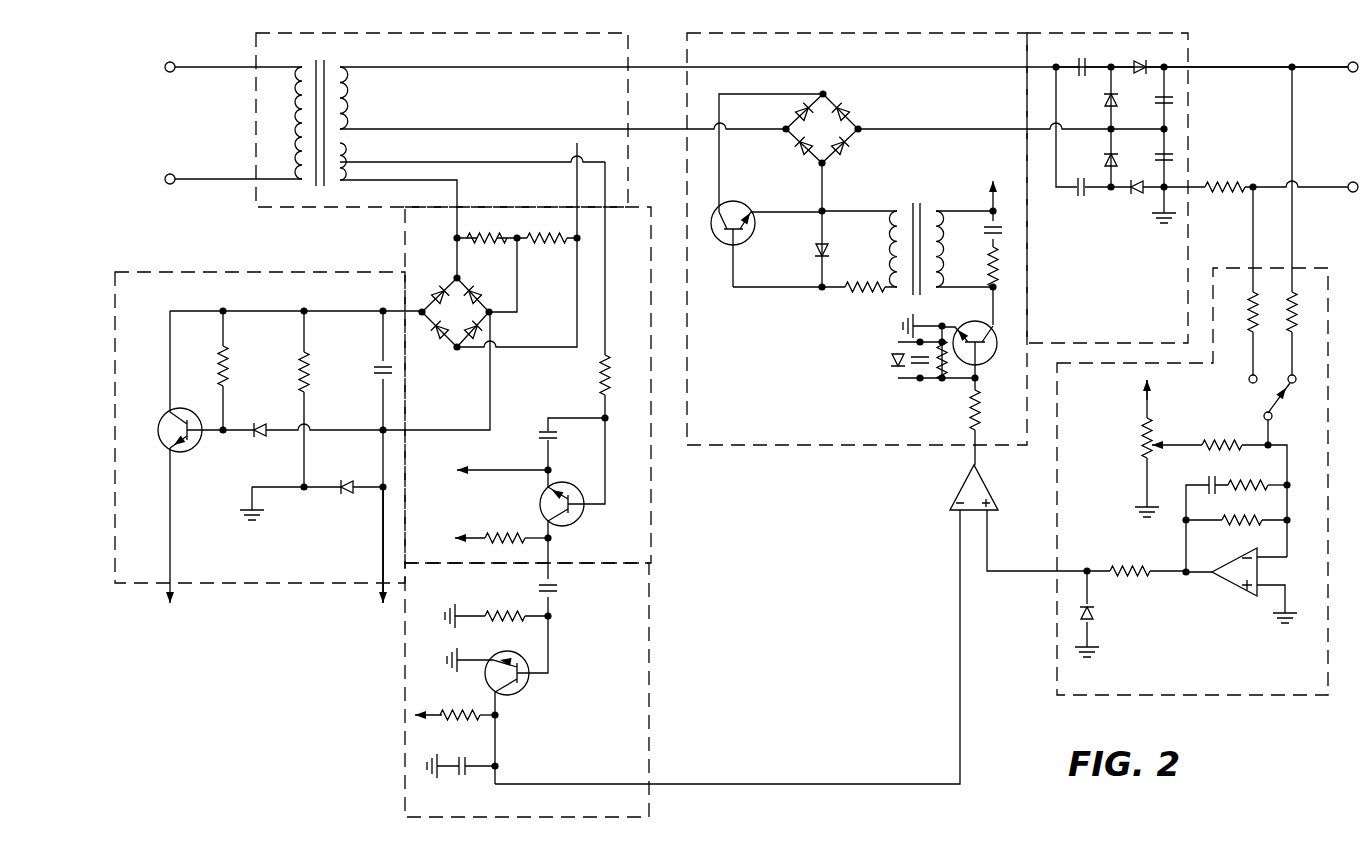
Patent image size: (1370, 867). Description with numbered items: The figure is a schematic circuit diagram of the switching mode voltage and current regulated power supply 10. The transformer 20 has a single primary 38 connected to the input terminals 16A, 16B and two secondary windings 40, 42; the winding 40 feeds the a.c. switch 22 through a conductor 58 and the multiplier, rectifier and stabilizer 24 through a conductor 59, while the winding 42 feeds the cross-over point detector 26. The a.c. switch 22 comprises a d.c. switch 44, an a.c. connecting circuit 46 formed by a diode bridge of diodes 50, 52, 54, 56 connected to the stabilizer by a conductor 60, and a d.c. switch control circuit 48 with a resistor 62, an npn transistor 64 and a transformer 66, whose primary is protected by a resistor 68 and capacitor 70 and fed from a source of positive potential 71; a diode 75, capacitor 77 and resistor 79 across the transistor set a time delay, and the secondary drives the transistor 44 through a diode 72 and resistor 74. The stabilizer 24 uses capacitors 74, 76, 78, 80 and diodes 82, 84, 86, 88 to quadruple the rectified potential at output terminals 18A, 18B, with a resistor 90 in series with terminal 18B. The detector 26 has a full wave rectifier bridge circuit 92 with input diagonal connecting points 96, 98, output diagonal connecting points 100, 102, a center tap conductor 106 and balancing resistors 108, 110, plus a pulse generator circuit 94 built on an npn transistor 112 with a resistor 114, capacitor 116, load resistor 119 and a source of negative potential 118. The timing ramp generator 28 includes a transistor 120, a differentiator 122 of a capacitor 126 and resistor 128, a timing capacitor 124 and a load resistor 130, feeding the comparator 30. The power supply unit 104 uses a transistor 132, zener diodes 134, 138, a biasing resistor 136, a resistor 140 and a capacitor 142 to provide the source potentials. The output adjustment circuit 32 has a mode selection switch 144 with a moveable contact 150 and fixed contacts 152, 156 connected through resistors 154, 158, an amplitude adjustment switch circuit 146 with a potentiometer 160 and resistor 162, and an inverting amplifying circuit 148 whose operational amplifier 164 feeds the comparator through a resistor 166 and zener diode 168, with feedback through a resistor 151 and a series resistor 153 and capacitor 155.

The switching mode voltage and current regulated power supply 10 is at (238, 33).
The input terminal 16A is at (167, 62).
The input terminal 16B is at (167, 174).
The output terminal 18A is at (1349, 62).
The output terminal 18B is at (1357, 181).
The transformer 20 is at (449, 44).
The a.c. switch 22 is at (875, 46).
The multiplier, rectifier and stabilizer 24 is at (1119, 44).
The cross-over point detector 26 is at (650, 492).
The timing ramp generator 28 is at (650, 640).
The comparator 30 is at (986, 480).
The output adjustment circuit 32 is at (1057, 527).
The primary 38 is at (294, 108).
The secondary winding 40 is at (348, 108).
The secondary winding 42 is at (338, 180).
The d.c. switch 44 is at (750, 240).
The a.c. connecting circuit 46 is at (824, 129).
The d.c. switch control circuit 48 is at (901, 366).
The diode 50 is at (793, 114).
The diode 52 is at (852, 114).
The diode 54 is at (800, 146).
The diode 56 is at (848, 152).
The conductor 58 is at (470, 128).
The conductor 59 is at (746, 66).
The conductor 60 is at (984, 132).
The resistor 62 is at (969, 412).
The npn transistor 64 is at (980, 362).
The transformer 66 is at (917, 204).
The resistor 68 is at (1011, 262).
The capacitor 70 is at (1011, 232).
The source of positive potential 71 is at (994, 182).
The diode 72 is at (831, 244).
The resistor 74 is at (866, 294).
The diode 75 is at (892, 350).
The capacitor 76 is at (1078, 182).
The capacitor 77 is at (911, 374).
The capacitor 78 is at (1160, 104).
The resistor 79 is at (936, 376).
The capacitor 80 is at (1169, 156).
The diode 82 is at (1104, 102).
The diode 84 is at (1116, 158).
The diode 86 is at (1134, 62).
The diode 88 is at (1136, 192).
The resistor 90 is at (1207, 183).
The full wave rectifier bridge circuit 92 is at (492, 266).
The pulse generator circuit 94 is at (536, 510).
The input diagonal connecting point 96 is at (468, 282).
The input diagonal connecting point 98 is at (456, 350).
The output diagonal connecting point 100 is at (416, 302).
The output diagonal connecting point 102 is at (490, 322).
The power supply unit 104 is at (206, 276).
The center tap conductor 106 is at (612, 306).
The first resistor 108 is at (496, 232).
The second resistor 110 is at (554, 232).
The npn transistor 112 is at (576, 518).
The resistor 114 is at (598, 386).
The capacitor 116 is at (543, 428).
The source of negative potential 118 is at (456, 468).
The load resistor 119 is at (504, 540).
The npn transistor 120 is at (520, 684).
The differentiator 122 is at (536, 600).
The timing capacitor 124 is at (464, 772).
The capacitor 126 is at (556, 584).
The resistor 128 is at (506, 618).
The load resistor 130 is at (458, 712).
The transistor 132 is at (192, 448).
The zener diode 134 is at (266, 424).
The biasing resistor 136 is at (226, 354).
The zener diode 138 is at (348, 492).
The resistor 140 is at (307, 376).
The capacitor 142 is at (378, 368).
The mode selection switch 144 is at (1256, 398).
The amplitude adjustment switch circuit 146 is at (1138, 458).
The inverting amplifying circuit 148 is at (1224, 588).
The moveable contact 150 is at (1272, 412).
The resistor 151 is at (1265, 524).
The fixed contact 152 is at (1298, 380).
The resistor 153 is at (1265, 486).
The resistor 154 is at (1296, 310).
The capacitor 155 is at (1216, 482).
The fixed contact 156 is at (1248, 379).
The resistor 158 is at (1254, 282).
The potentiometer 160 is at (1144, 444).
The resistor 162 is at (1218, 438).
The operational amplifier 164 is at (1238, 588).
The resistor 166 is at (1130, 568).
The zener diode 168 is at (1098, 610).